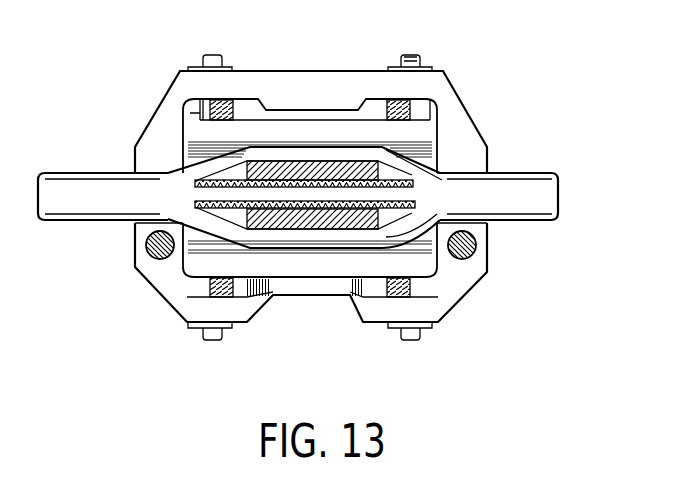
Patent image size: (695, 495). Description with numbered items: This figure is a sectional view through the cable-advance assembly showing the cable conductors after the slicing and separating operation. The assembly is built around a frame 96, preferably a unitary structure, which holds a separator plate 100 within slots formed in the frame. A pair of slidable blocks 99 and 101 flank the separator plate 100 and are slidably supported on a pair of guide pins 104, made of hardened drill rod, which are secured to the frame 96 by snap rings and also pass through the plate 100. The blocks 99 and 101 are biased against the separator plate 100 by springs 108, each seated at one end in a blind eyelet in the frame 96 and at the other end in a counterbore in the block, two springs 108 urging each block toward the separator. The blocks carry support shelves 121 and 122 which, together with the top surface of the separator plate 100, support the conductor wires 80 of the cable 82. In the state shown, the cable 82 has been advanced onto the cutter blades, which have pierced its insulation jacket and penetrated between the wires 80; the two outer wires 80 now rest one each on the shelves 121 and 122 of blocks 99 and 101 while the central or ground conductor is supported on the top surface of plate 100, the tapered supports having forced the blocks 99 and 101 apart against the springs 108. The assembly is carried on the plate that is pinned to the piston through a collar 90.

The conductor wires 80 is at (412, 190).
The cable 82 is at (531, 222).
The collar 90 is at (323, 294).
The frame 96 is at (172, 93).
The slidable block 99 is at (190, 127).
The separator plate 100 is at (298, 208).
The slidable block 101 is at (180, 287).
The guide pins 104 is at (421, 60).
The springs 108 is at (383, 108).
The support shelf 121 is at (292, 167).
The support shelf 122 is at (318, 227).